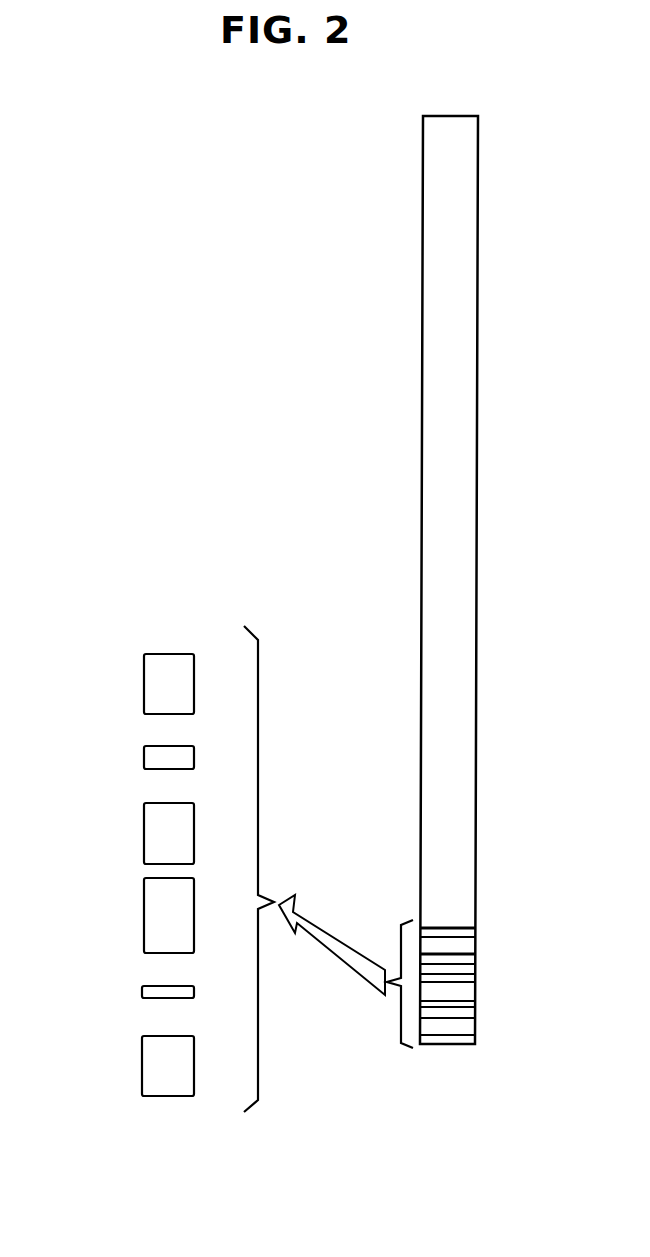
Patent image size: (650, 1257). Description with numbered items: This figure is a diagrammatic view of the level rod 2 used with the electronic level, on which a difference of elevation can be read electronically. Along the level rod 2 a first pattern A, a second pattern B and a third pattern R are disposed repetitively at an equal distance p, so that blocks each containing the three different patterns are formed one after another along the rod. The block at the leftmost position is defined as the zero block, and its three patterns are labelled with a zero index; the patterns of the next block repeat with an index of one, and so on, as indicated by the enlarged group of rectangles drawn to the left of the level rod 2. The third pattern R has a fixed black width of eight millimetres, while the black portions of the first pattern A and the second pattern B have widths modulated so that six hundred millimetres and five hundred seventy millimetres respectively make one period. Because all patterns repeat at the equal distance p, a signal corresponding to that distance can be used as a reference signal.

The level rod 2 is at (466, 233).